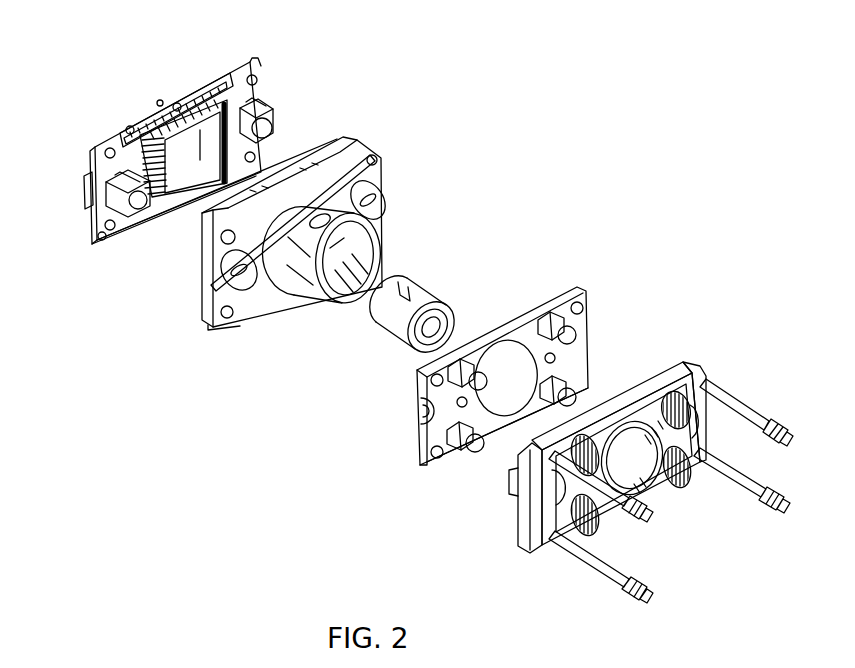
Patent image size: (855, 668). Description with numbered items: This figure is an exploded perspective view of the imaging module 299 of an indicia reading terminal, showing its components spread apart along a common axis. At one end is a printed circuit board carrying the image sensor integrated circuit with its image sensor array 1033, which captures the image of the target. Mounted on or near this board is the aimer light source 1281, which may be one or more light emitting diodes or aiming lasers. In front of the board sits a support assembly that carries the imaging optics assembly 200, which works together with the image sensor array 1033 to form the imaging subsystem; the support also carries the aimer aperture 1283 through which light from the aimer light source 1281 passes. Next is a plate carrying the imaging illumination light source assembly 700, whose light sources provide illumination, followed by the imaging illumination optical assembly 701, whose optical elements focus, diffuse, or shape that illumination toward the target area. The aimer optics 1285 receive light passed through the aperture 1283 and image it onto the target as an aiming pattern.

The imaging module 299 is at (694, 47).
The aimer light source 1281 is at (183, 156).
The image sensor array 1033 is at (183, 184).
The aimer aperture 1283 is at (298, 233).
The imaging optics assembly 200 is at (425, 299).
The imaging illumination light source assembly 700 is at (502, 382).
The imaging illumination optical assembly 701 is at (671, 467).
The aimer optics 1285 is at (614, 457).